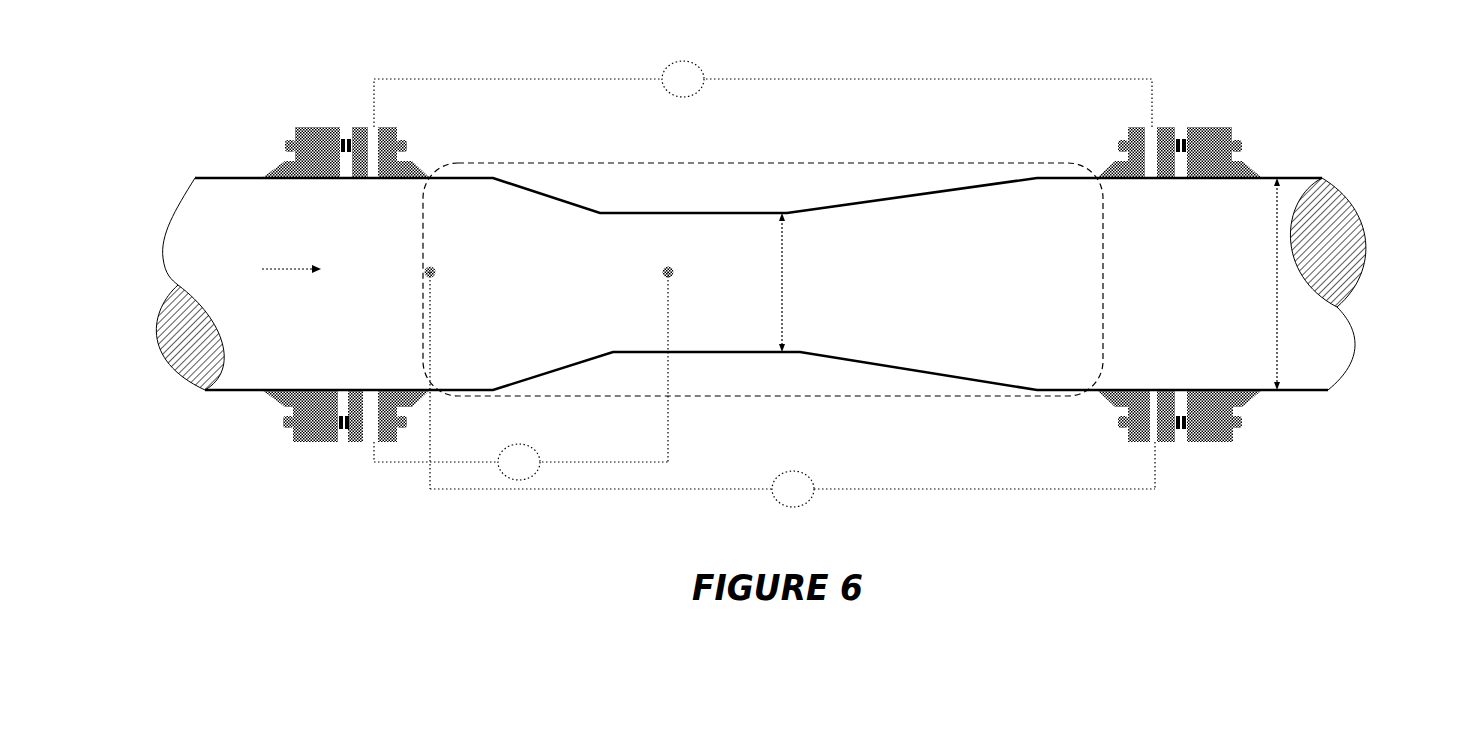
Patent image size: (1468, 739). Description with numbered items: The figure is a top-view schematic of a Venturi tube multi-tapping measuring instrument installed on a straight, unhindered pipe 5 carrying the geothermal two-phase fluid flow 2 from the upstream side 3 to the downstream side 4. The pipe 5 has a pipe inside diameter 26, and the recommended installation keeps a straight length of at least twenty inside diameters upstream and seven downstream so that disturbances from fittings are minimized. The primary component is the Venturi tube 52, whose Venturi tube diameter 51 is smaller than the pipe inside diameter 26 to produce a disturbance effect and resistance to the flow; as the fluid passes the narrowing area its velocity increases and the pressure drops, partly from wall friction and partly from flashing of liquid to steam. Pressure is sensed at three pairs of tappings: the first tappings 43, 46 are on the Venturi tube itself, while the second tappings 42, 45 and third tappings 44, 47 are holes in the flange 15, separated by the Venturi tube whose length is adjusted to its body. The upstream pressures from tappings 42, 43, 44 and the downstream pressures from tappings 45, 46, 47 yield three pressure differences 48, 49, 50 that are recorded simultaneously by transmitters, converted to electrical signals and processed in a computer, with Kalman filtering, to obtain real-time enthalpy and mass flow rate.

The two-phase fluid flow 2 is at (250, 237).
The upstream side 3 is at (190, 157).
The downstream side 4 is at (1362, 157).
The pipe 5 is at (258, 372).
The flange 15 is at (297, 165).
The pipe inside diameter 26 is at (1242, 300).
The second upstream tapping 42 is at (373, 127).
The first upstream tapping 43 is at (437, 272).
The third upstream tapping 44 is at (372, 435).
The second downstream tapping 45 is at (1158, 127).
The first downstream tapping 46 is at (661, 272).
The third downstream tapping 47 is at (1157, 435).
The first pressure difference 48 is at (680, 61).
The second pressure difference 49 is at (538, 452).
The third pressure difference 50 is at (808, 476).
The Venturi tube diameter 51 is at (728, 258).
The Venturi tube 52 is at (922, 163).